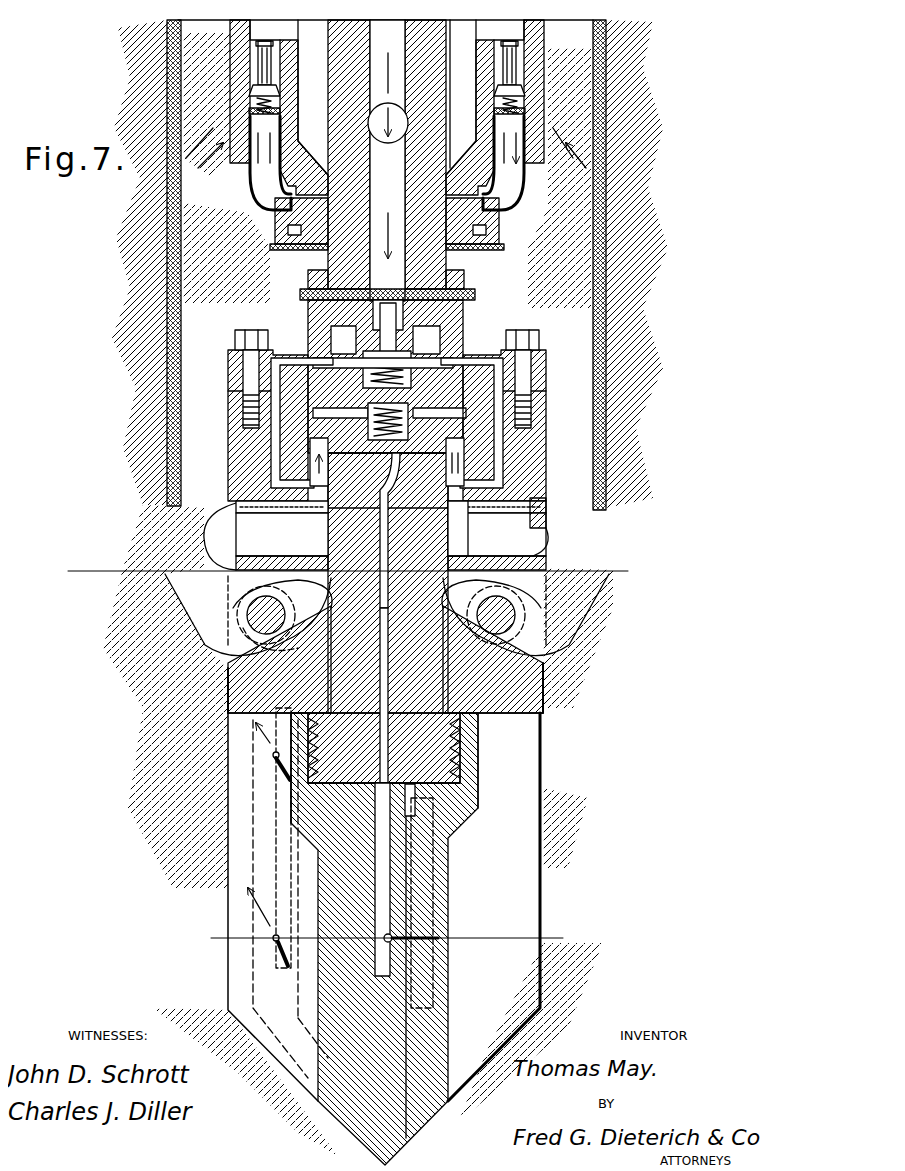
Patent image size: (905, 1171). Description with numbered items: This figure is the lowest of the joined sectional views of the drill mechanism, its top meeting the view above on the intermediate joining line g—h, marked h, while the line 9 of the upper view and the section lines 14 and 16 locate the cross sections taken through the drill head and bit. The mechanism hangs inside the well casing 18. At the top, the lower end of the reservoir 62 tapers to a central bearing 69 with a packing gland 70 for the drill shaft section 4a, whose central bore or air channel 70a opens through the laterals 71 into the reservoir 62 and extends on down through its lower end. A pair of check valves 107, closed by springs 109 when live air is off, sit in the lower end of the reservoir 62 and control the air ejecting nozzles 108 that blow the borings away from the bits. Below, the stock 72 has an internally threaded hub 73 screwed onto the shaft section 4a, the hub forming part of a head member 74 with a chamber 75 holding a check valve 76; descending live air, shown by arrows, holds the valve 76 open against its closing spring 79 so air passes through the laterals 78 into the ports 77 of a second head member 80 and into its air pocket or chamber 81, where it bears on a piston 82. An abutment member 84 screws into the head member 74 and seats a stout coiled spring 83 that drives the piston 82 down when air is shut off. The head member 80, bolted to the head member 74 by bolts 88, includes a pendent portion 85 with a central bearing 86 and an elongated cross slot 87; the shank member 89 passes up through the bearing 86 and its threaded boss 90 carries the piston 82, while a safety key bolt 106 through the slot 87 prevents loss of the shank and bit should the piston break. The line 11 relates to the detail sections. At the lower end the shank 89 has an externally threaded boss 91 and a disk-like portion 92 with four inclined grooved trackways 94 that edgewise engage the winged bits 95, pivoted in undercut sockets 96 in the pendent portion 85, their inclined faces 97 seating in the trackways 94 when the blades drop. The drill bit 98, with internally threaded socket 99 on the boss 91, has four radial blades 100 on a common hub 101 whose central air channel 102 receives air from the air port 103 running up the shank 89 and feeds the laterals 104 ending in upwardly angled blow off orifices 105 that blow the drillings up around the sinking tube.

The section line 9— 9 is at (157, 262).
The intermediate joining line g— h is at (619, 264).
The well casing 18 is at (158, 290).
The shank member 89 is at (386, 401).
The central bore or air channel 70a is at (387, 160).
The laterals 71 is at (379, 95).
The central bearing 69 is at (283, 168).
The reservoir 62 is at (313, 97).
The drill shaft section 4a is at (461, 97).
The check valves 107 is at (246, 76).
The springs 109 is at (250, 100).
The air ejecting nozzles 108 is at (262, 197).
The packing gland 70 is at (276, 240).
The internally threaded hub 73 is at (387, 257).
The laterals 78 is at (300, 341).
The head member 74 is at (300, 342).
The check valve 76 is at (343, 340).
The chamber 75 is at (426, 340).
The closing spring 79 is at (541, 400).
The abutment member 84 is at (383, 374).
The stout coiled spring 83 is at (327, 417).
The air pocket or chamber 81 is at (540, 443).
The head portion or stock 72 is at (222, 370).
The bolts 88 is at (387, 368).
The second head member 80 is at (240, 478).
The threaded boss 90 is at (388, 480).
The section line 11— 11 is at (387, 462).
The piston 82 is at (396, 470).
The air port 103 is at (382, 725).
The ports 77 is at (391, 518).
The vertically elongated cross slot 87 is at (391, 534).
The central bearing 86 is at (450, 505).
The pendent portion 85 is at (228, 553).
The safety key bolt 106 is at (530, 500).
The section line 14— 14 is at (351, 577).
The winged bits or blades 95 is at (178, 592).
The undercut radially disposed sockets 96 is at (387, 612).
The beveled or inclined faces 97 is at (182, 612).
The grooved trackways 94 is at (225, 658).
The enlarged disk-like portion 92 is at (230, 680).
The externally threaded boss 91 is at (452, 732).
The internally threaded socket 99 is at (470, 750).
The drill bit 98 is at (476, 784).
The radial blades 100 is at (195, 957).
The hub 101 is at (440, 878).
The central air pocket or channel 102 is at (425, 905).
The laterals 104 is at (298, 945).
The blow off orifices 105 is at (265, 748).
The section line 16— 16 is at (384, 941).